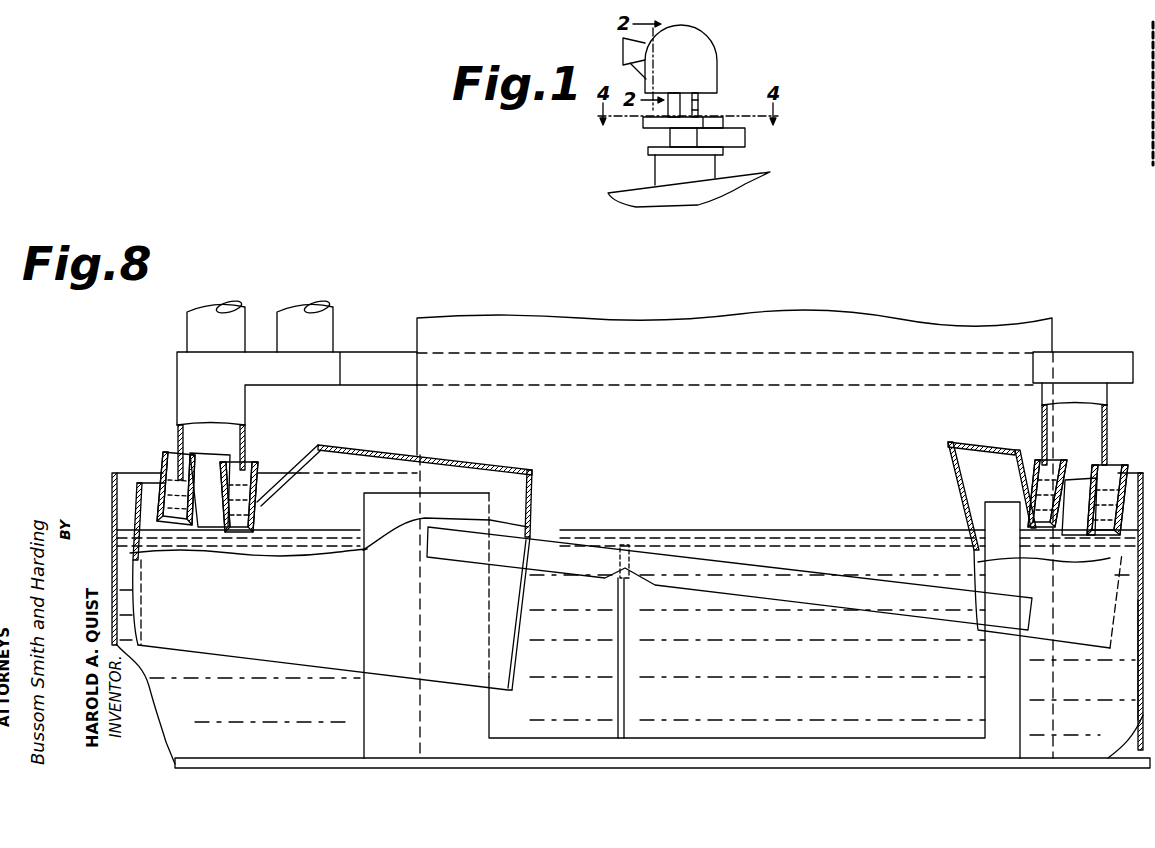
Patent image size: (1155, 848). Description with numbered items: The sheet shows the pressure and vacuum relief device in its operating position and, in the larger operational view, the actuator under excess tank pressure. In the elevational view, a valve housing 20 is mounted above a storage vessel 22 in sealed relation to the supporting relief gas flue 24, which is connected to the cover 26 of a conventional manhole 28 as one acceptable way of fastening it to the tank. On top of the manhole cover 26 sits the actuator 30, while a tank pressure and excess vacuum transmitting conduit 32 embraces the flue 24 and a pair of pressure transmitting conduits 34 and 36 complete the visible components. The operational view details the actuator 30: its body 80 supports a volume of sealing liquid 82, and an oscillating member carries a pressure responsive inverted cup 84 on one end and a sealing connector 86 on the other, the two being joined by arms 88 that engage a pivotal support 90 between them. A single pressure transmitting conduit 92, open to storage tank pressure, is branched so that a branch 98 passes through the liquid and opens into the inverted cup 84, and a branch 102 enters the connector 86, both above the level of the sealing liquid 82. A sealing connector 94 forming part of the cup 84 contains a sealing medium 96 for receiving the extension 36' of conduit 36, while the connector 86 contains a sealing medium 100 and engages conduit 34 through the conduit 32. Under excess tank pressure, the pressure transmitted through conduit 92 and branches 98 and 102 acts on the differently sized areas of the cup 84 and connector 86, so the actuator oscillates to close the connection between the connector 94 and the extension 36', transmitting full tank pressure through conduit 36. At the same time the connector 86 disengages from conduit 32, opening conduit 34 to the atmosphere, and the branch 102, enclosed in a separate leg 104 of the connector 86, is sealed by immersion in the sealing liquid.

In FIG. 1, the valve housing 20 is at (722, 58).
In FIG. 1, the storage vessel 22 is at (746, 190).
In FIG. 1, the relief gas flue 24 is at (678, 105).
In FIG. 8, the relief gas flue 24 is at (470, 331).
In FIG. 1, the manhole cover 26 is at (724, 152).
In FIG. 1, the manhole 28 is at (668, 162).
In FIG. 1, the actuator 30 is at (746, 137).
In FIG. 8, the actuator 30 is at (1134, 658).
In FIG. 1, the tank pressure and excess vacuum transmitting conduit 32 is at (656, 122).
In FIG. 8, the tank pressure and excess vacuum transmitting conduit 32 is at (405, 380).
In FIG. 1, the pressure transmitting conduit 34 is at (700, 101).
In FIG. 8, the pressure transmitting conduit 34 is at (198, 326).
In FIG. 1, the pressure transmitting conduit 36 is at (722, 99).
In FIG. 8, the pressure transmitting conduit 36 is at (331, 320).
In FIG. 8, the extension of conduit 36 36' is at (181, 440).
In FIG. 8, the body 80 is at (1138, 688).
In FIG. 8, the sealing liquid 82 is at (884, 706).
In FIG. 8, the pressure responsive inverted cup 84 is at (536, 490).
In FIG. 8, the sealing connector 86 is at (1120, 470).
In FIG. 8, the arms 88 is at (718, 568).
In FIG. 8, the pivotal support 90 is at (627, 565).
In FIG. 8, the pressure transmitting conduit 92 is at (662, 752).
In FIG. 8, the sealing connector 94 is at (163, 465).
In FIG. 8, the sealing medium 96 is at (250, 468).
In FIG. 8, the branch of conduit 92 98 is at (412, 748).
In FIG. 8, the sealing medium 100 is at (1105, 480).
In FIG. 8, the branch of conduit 92 102 is at (1010, 733).
In FIG. 8, the separate leg 104 is at (955, 466).